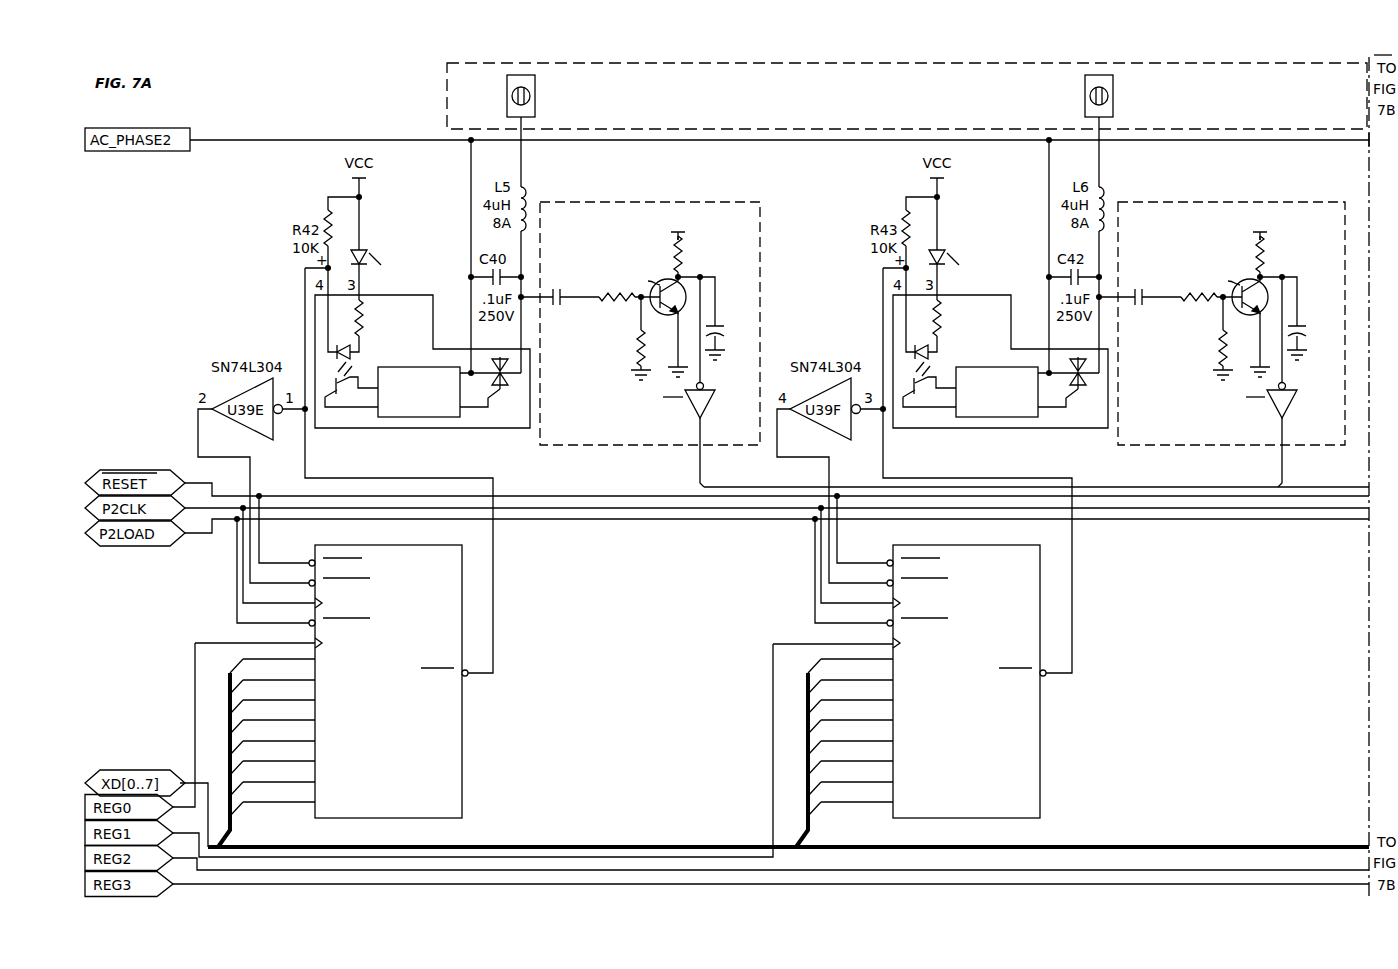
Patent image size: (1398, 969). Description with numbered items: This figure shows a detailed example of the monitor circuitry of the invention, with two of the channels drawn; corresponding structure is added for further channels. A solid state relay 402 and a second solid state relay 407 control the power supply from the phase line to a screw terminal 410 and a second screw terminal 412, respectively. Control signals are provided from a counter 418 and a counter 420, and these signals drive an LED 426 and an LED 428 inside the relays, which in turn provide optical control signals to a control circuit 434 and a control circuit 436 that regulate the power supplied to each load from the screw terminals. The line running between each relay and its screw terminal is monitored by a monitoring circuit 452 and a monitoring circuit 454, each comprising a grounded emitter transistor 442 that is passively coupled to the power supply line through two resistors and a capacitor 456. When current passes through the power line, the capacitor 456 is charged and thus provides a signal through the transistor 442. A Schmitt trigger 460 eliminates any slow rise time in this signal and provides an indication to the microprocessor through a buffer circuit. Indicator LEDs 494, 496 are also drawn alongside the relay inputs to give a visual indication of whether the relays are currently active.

The solid state relay 402 is at (424, 383).
The solid state relay OPTO6 407 is at (1002, 383).
The screw terminal 410 is at (536, 113).
The screw terminal 412 is at (1114, 113).
The counter 418 is at (463, 757).
The counter 420 is at (1041, 757).
The LED 426 is at (353, 345).
The LED 428 is at (931, 345).
The control circuit 434 is at (410, 367).
The control circuit 436 is at (988, 367).
The grounded emitter transistor 442 is at (670, 280).
The monitoring circuit 452 is at (593, 445).
The monitoring circuit 454 is at (1174, 445).
The capacitor 456 is at (576, 288).
The Schmitt trigger 460 is at (707, 399).
The indicator LED9 494 is at (382, 247).
The indicator LED10 496 is at (960, 247).